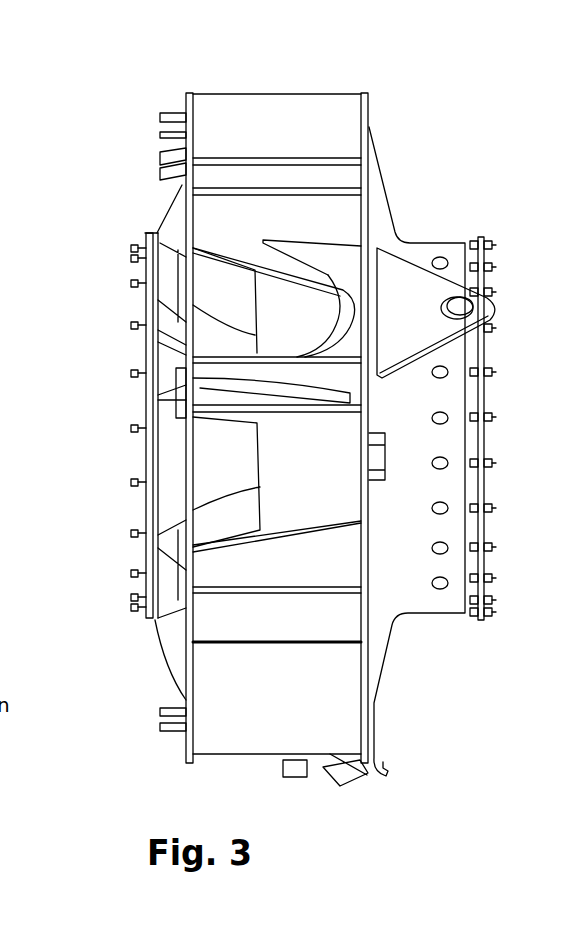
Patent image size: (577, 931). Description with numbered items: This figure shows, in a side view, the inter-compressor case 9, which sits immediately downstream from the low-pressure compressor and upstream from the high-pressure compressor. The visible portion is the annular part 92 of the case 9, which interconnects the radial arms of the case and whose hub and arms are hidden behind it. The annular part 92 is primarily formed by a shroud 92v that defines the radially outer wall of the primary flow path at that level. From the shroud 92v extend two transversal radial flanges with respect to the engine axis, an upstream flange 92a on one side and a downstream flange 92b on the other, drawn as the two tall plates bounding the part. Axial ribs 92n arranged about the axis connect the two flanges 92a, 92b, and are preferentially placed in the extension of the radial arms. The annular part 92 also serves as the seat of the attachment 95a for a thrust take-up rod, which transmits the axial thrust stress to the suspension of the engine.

The inter-compressor case 9 is at (112, 723).
The annular part 92 is at (370, 219).
The upstream radial flange 92a is at (183, 103).
The downstream radial flange 92b is at (372, 108).
The axial ribs 92n is at (230, 357).
The shroud 92v is at (287, 453).
The attachment for thrust take-up rod 95a is at (393, 342).